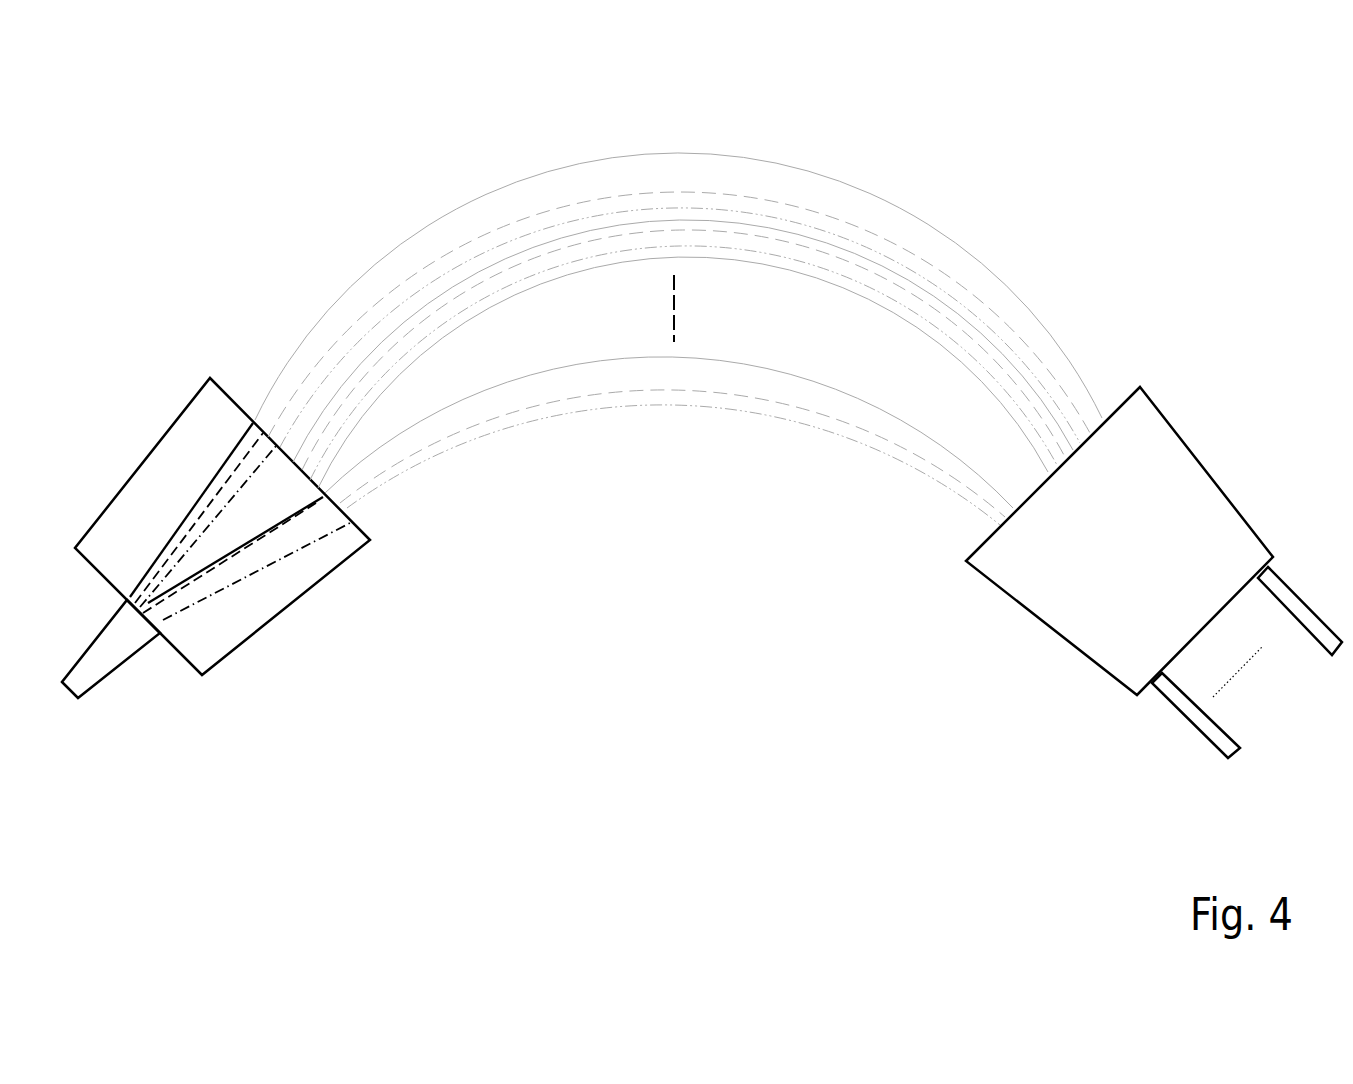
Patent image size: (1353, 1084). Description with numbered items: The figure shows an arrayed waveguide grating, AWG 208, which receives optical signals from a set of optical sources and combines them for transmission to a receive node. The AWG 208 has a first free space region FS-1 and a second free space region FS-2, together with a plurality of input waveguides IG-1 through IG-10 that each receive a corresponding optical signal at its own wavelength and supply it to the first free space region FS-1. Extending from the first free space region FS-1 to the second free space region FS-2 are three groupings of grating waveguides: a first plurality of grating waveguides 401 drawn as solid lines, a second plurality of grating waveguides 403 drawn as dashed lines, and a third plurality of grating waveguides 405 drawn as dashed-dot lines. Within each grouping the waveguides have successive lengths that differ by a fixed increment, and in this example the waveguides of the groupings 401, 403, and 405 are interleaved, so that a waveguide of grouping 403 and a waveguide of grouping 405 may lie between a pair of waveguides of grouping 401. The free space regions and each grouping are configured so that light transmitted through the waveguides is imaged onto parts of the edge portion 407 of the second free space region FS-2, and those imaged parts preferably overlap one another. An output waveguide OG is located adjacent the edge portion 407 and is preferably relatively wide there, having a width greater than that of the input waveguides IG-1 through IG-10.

The first plurality of grating waveguides 401 is at (800, 170).
The second plurality of grating waveguides 403 is at (532, 222).
The third plurality of grating waveguides 405 is at (418, 307).
The edge portion of free space region FS-2 407 is at (177, 653).
The second free space region FS-2 is at (307, 590).
The first free space region FS-1 is at (1013, 600).
The output waveguide OG is at (95, 690).
The input waveguide IG-1 is at (1202, 735).
The input waveguide IG-10 is at (1318, 620).
The arrayed waveguide grating 208 is at (549, 877).